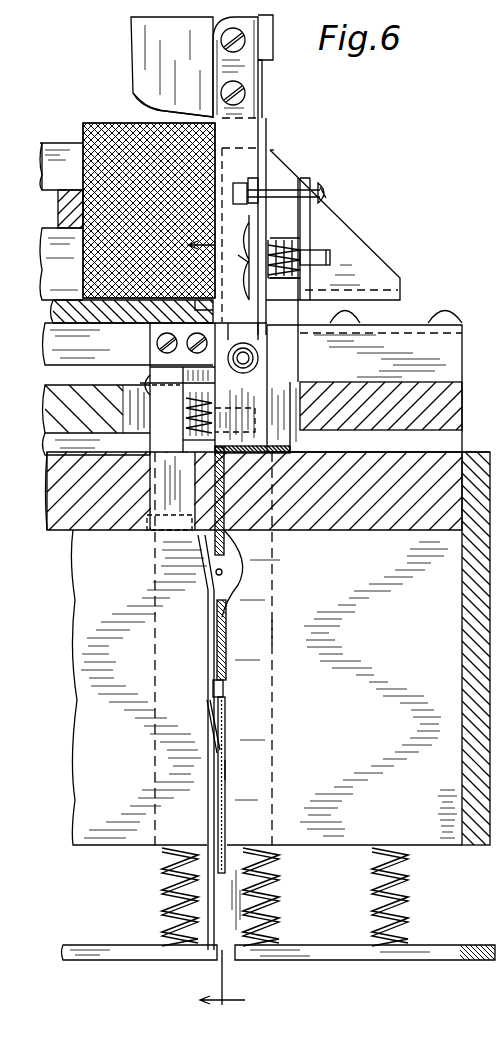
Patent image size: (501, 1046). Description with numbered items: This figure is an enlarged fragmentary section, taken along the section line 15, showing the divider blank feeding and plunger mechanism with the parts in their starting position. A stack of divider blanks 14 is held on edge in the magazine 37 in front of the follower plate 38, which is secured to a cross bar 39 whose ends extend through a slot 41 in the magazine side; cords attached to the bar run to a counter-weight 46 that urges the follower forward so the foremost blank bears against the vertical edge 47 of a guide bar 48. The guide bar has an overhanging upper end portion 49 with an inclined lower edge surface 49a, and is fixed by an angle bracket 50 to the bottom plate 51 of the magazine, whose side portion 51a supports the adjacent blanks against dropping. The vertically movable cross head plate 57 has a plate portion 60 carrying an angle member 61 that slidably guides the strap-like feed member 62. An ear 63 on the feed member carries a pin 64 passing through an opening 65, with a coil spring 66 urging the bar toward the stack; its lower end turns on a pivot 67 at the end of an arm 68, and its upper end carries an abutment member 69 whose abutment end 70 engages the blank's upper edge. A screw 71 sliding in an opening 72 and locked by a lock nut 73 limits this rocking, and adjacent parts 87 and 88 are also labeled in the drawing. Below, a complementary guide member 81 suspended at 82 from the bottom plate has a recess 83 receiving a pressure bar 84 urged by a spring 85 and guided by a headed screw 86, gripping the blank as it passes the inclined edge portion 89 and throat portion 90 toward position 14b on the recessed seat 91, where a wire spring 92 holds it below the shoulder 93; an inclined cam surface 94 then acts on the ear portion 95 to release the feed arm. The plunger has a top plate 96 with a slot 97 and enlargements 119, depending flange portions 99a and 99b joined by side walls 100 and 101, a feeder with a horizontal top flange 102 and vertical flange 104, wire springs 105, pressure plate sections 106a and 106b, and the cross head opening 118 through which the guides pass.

The divider blank 14 is at (119, 114).
The blank position on recessed seat 14b is at (233, 775).
The section line 15 is at (214, 630).
The magazine 37 is at (68, 125).
The follower plate 38 is at (80, 252).
The cross bar 39 is at (66, 216).
The slot 41 is at (61, 166).
The counter-weight 46 is at (273, 598).
The vertical edge 47 is at (220, 137).
The guide bar 48 is at (270, 150).
The upper end portion 49 is at (140, 33).
The inclined lower edge surface 49a is at (148, 110).
The angle bracket 50 is at (358, 244).
The bottom plate 51 is at (72, 300).
The side portion 51a is at (262, 309).
The cross head plate 57 is at (92, 395).
The plate portion 60 is at (455, 405).
The angle member 61 is at (427, 318).
The feed member 62 is at (248, 78).
The ear 63 is at (262, 228).
The pin 64 is at (331, 258).
The opening 65 is at (303, 247).
The coil spring 66 is at (300, 273).
The pivot 67 is at (258, 360).
The arm 68 is at (450, 355).
The abutment member 69 is at (210, 50).
The abutment end 70 is at (210, 116).
The screw 71 is at (298, 196).
The opening 72 is at (322, 215).
The lock nut 73 is at (242, 183).
The complementary guide member 81 is at (146, 602).
The suspension 82 is at (156, 343).
The recess 83 is at (188, 430).
The pressure bar 84 is at (200, 445).
The spring 85 is at (225, 419).
The headed screw 86 is at (146, 384).
The lever 87 is at (256, 228).
The lever pivot 88 is at (238, 254).
The inclined edge portion 89 is at (226, 569).
The throat portion 90 is at (220, 606).
The recessed seat 91 is at (222, 722).
The wire spring 92 is at (210, 735).
The shoulder 93 is at (217, 690).
The inclined cam surface 94 is at (273, 632).
The ear portion 95 is at (273, 35).
The top plate 96 is at (406, 512).
The slot 97 is at (188, 470).
The flange portion 99a is at (137, 838).
The flange portion 99b is at (338, 838).
The side wall 100 is at (285, 897).
The side wall 101 is at (480, 830).
The horizontal top flange 102 is at (295, 450).
The vertical flange 104 is at (226, 642).
The wire spring 105 is at (208, 630).
The pressure plate section 106a is at (115, 958).
The pressure plate section 106b is at (368, 957).
The opening 118 is at (312, 382).
The enlargement 119 is at (336, 538).